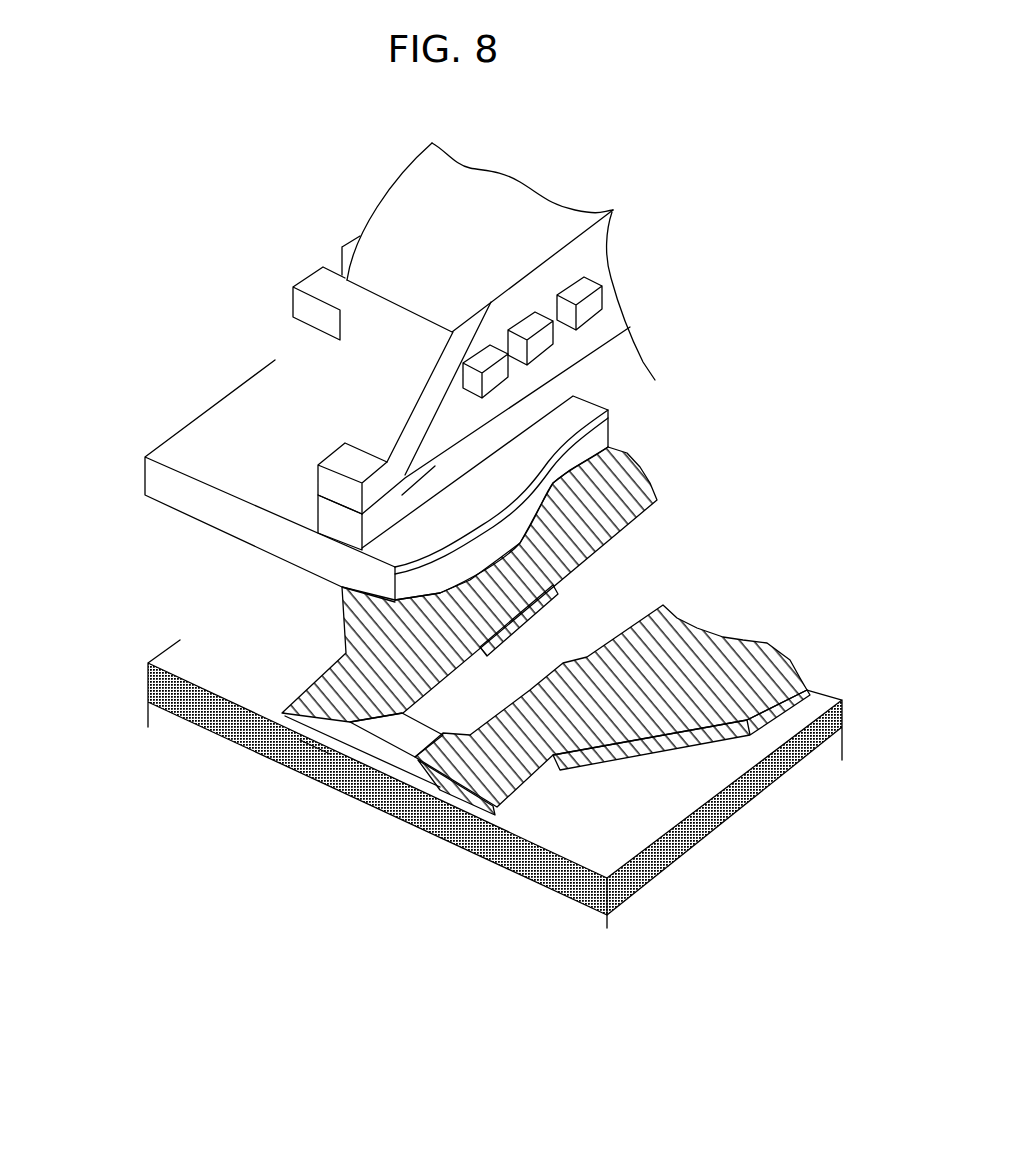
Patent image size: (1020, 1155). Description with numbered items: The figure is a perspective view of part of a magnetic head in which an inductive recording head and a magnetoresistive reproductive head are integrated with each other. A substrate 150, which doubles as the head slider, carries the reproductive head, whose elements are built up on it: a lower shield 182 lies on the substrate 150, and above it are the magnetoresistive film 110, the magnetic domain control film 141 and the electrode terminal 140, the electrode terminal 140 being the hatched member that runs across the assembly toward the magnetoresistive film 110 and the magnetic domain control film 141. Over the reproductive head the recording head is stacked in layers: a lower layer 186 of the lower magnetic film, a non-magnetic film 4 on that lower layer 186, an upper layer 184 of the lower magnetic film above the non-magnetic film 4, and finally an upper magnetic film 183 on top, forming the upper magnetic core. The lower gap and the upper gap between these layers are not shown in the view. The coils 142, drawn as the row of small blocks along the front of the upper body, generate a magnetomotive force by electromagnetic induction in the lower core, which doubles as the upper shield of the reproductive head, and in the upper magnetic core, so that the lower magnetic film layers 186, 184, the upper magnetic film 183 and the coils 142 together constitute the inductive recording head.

The non-magnetic film 4 is at (145, 455).
The lower layer of the lower magnetic film 186 is at (145, 484).
The upper magnetic film 183 is at (320, 473).
The upper layer of the lower magnetic film 184 is at (320, 512).
The coils 142 is at (589, 308).
The electrode terminal 140 is at (697, 640).
The magnetic domain control film 141 is at (440, 787).
The magnetoresistive film 110 is at (382, 757).
The substrate 150 is at (516, 905).
The lower shield 182 is at (652, 860).